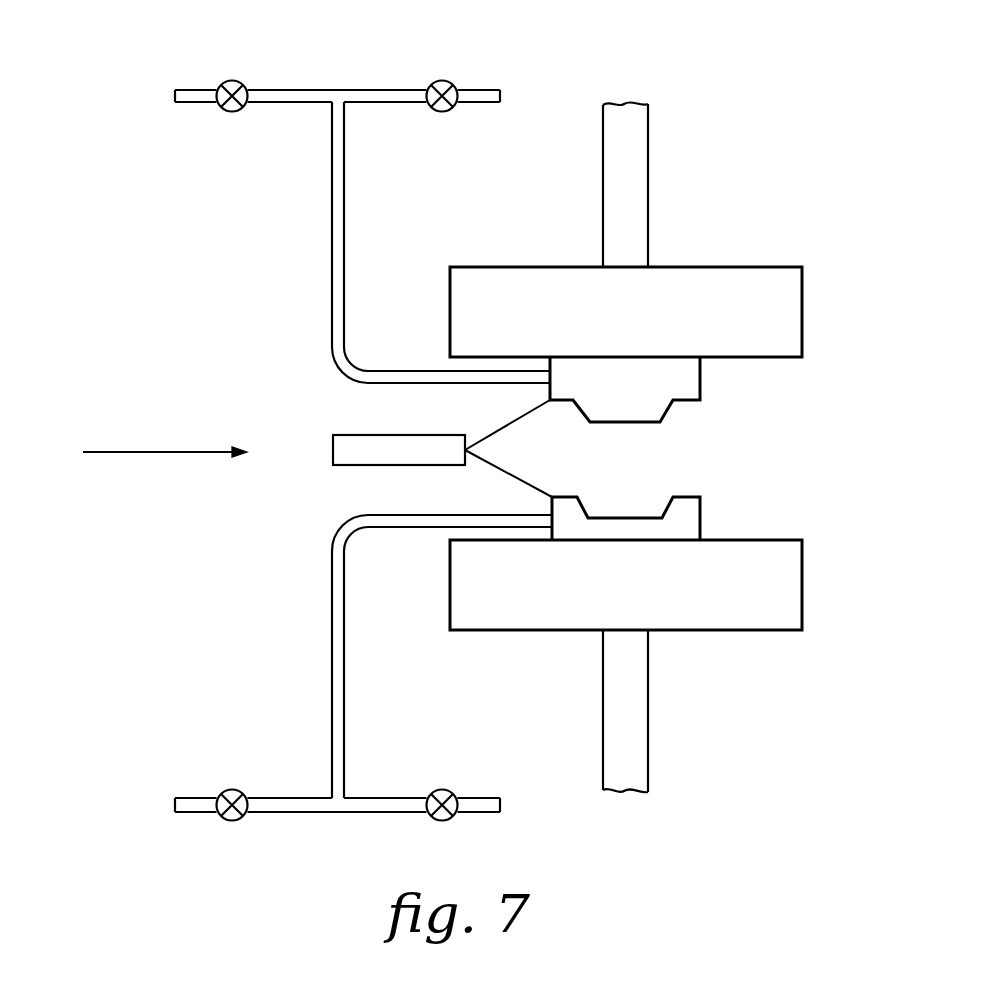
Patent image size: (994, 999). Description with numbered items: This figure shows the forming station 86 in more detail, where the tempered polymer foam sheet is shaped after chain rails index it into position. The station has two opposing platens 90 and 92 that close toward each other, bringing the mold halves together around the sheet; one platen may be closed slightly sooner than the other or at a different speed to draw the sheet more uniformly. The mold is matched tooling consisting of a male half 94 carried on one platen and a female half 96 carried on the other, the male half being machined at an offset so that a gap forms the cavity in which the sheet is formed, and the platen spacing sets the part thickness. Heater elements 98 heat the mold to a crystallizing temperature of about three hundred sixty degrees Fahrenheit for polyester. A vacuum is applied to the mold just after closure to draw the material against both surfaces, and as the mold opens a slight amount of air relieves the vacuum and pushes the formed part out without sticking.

The forming station 86 is at (797, 94).
The platen 90 is at (626, 229).
The platen 92 is at (626, 666).
The male mold half 94 is at (700, 381).
The female mold half 96 is at (700, 515).
The heater elements 98 is at (333, 448).